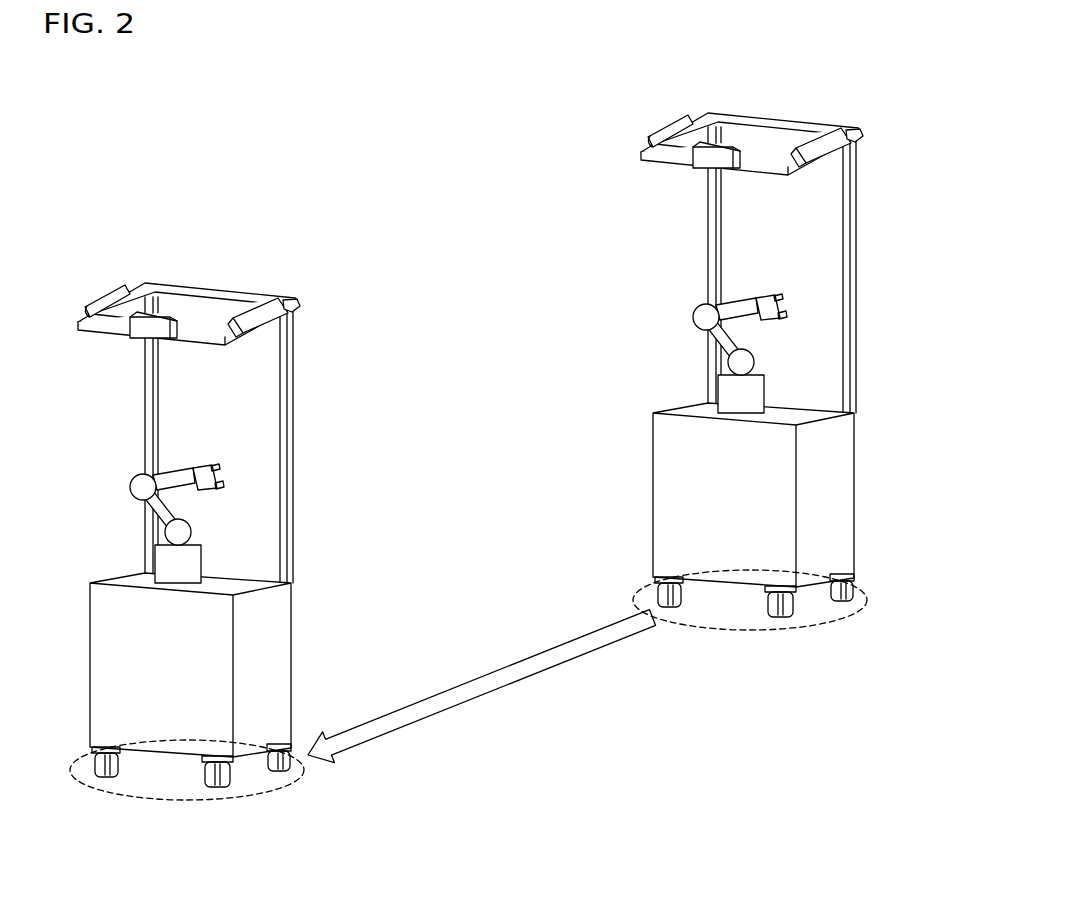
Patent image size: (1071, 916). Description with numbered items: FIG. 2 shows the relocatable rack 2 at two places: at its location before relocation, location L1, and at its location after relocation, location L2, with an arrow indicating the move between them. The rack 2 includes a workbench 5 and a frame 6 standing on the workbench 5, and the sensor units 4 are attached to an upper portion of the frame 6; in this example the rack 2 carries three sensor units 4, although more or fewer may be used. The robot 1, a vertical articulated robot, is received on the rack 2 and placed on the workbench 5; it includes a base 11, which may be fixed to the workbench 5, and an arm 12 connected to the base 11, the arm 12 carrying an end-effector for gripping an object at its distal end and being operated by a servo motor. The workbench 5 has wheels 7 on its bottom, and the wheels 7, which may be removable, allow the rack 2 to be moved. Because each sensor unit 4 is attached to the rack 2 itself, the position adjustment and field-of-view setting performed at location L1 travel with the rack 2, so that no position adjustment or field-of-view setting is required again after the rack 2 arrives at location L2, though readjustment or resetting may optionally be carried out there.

The robot 1 is at (480, 406).
The rack 2 is at (228, 282).
The sensor unit 4 is at (87, 295).
The workbench 5 is at (273, 652).
The frame 6 is at (284, 417).
The wheels 7 is at (102, 767).
The base 11 is at (204, 560).
The arm 12 is at (170, 507).
The location before relocation L1 is at (867, 598).
The location after relocation L2 is at (253, 790).